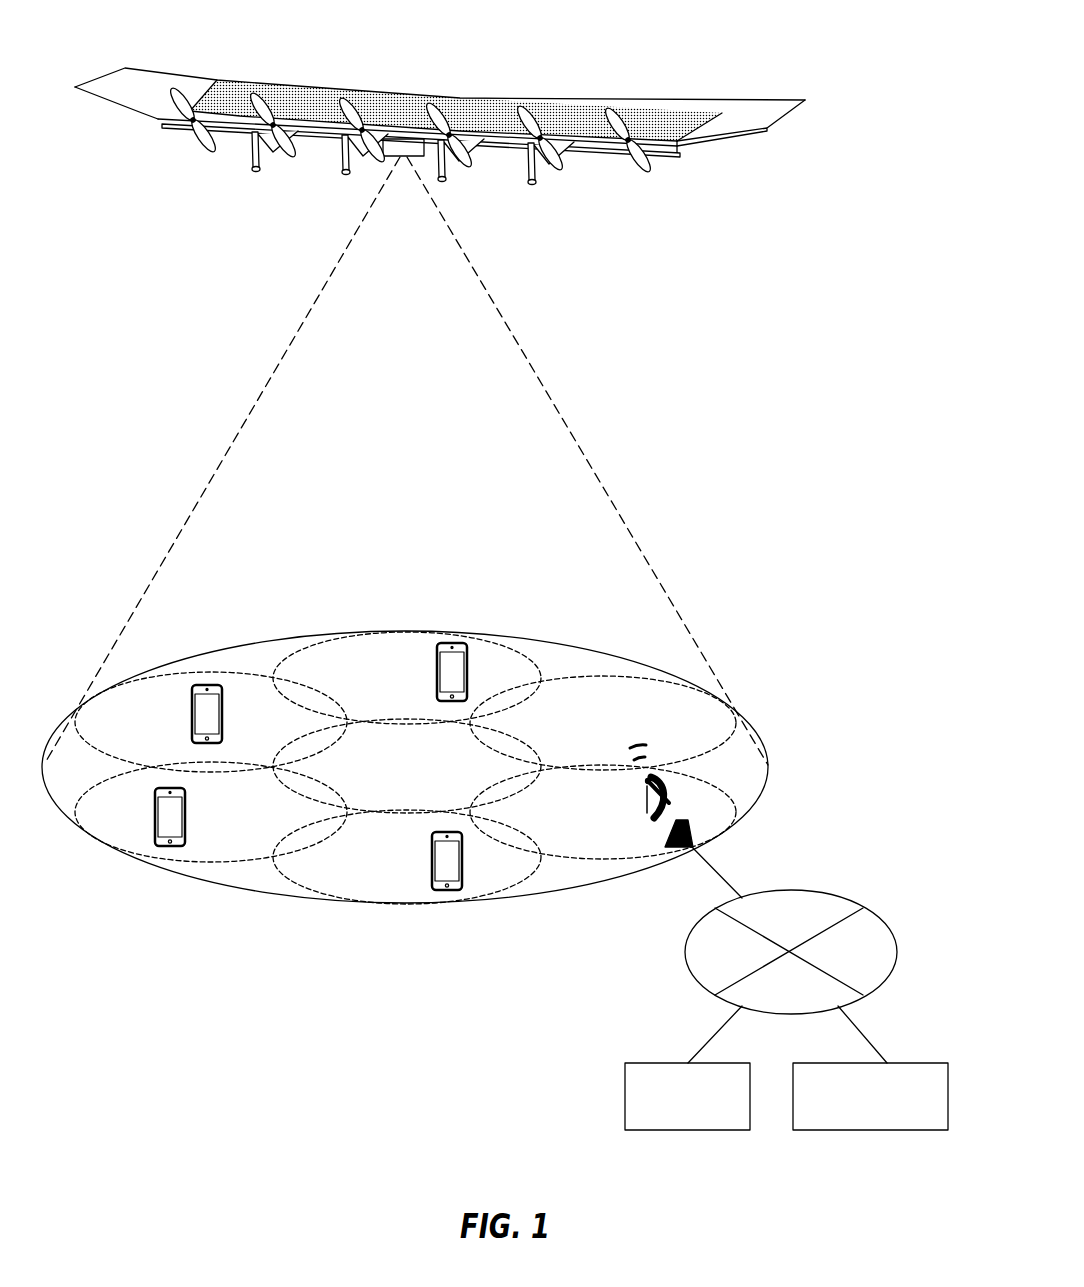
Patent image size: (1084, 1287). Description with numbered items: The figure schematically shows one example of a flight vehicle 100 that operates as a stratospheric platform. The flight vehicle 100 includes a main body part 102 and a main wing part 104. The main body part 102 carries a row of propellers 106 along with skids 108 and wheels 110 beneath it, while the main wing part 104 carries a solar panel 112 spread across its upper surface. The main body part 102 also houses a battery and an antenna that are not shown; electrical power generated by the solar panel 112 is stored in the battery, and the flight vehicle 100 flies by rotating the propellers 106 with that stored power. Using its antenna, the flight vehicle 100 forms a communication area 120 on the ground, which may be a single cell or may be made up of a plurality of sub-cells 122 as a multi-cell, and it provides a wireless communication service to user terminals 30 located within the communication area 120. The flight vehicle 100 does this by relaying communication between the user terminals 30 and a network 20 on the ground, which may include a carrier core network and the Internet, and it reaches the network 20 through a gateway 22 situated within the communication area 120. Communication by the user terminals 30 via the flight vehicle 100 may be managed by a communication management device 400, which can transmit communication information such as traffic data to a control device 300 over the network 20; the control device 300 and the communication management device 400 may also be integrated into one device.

The flight vehicle 100 is at (101, 18).
The main body part 102 is at (400, 143).
The main wing part 104 is at (142, 80).
The propellers 106 is at (197, 142).
The skids 108 is at (253, 150).
The wheels 110 is at (266, 165).
The solar panel 112 is at (233, 88).
The communication area 120 is at (534, 642).
The sub-cells 122 is at (402, 641).
The user terminals 30 is at (225, 718).
The gateway 22 is at (645, 815).
The network 20 is at (838, 894).
The control device 300 is at (745, 1053).
The communication management device 400 is at (943, 1053).